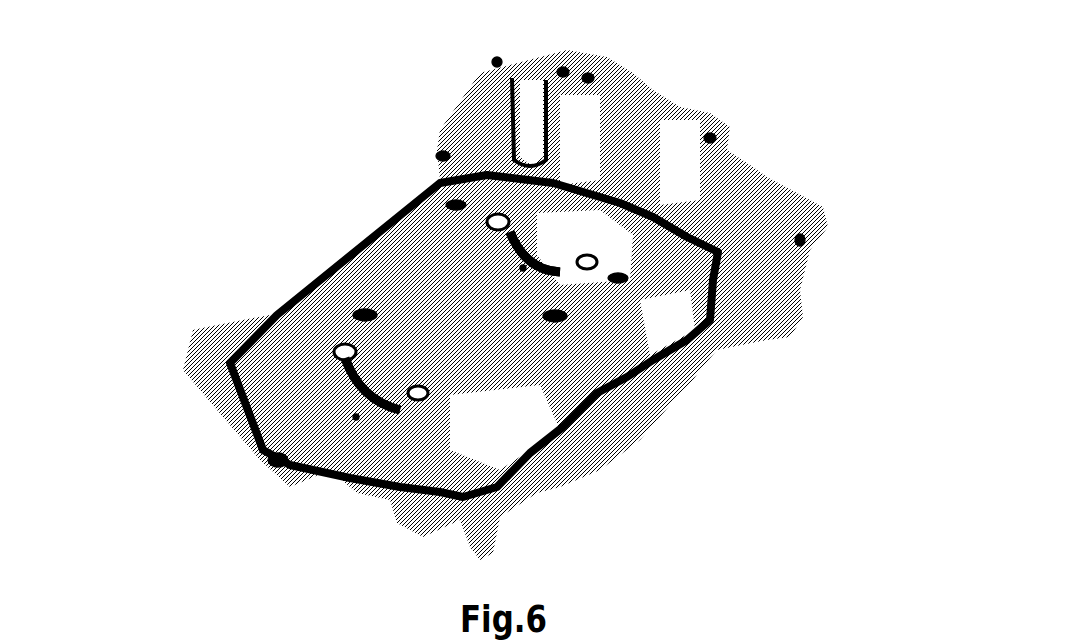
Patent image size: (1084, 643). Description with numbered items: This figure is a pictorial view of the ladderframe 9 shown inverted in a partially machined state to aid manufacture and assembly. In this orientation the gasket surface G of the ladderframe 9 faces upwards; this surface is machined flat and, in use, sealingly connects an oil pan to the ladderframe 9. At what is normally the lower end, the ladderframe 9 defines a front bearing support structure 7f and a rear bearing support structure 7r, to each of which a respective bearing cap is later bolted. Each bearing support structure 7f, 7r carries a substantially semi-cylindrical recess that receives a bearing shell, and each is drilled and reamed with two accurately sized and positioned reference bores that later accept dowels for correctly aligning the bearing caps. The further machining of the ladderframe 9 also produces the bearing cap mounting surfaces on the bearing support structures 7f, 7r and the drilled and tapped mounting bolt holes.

The gasket surface G is at (278, 312).
The ladderframe 9 is at (432, 153).
The rear bearing support structure 7r is at (521, 266).
The front bearing support structure 7f is at (275, 465).